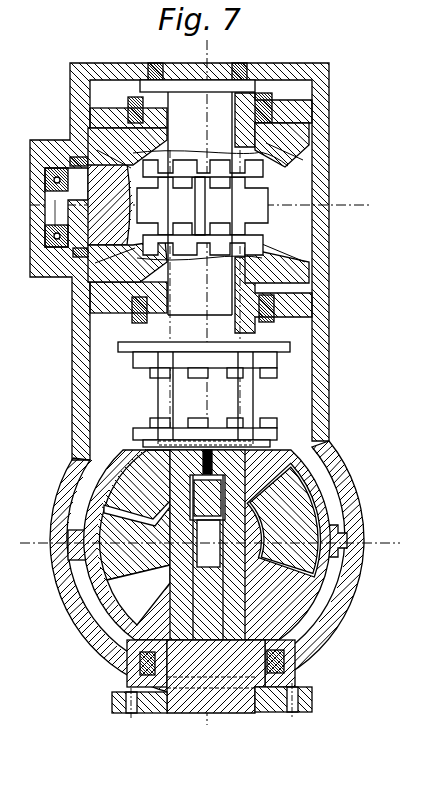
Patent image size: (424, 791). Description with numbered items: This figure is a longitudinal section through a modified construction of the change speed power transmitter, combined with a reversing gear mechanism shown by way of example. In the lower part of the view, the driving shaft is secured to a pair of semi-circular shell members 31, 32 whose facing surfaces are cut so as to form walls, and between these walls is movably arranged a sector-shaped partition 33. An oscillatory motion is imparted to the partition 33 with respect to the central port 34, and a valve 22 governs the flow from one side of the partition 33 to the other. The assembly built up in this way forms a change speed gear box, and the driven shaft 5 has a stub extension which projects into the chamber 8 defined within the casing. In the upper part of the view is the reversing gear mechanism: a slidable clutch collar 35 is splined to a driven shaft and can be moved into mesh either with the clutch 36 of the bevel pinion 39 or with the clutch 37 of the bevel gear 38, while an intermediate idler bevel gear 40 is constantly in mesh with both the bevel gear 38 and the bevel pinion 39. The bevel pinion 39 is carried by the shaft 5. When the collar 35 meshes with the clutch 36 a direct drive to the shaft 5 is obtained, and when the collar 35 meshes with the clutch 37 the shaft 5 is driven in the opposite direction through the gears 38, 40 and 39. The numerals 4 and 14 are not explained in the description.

The housing 4 is at (164, 261).
The driven shaft 5 is at (148, 400).
The chamber 8 is at (47, 543).
The base 14 is at (83, 697).
The valve 22 is at (215, 497).
The semi-circular shell member 31 is at (283, 605).
The semi-circular shell member 32 is at (307, 483).
The sector-shaped partition 33 is at (315, 568).
The central port 34 is at (210, 548).
The slidable clutch collar 35 is at (283, 202).
The clutch 36 is at (146, 292).
The clutch 37 is at (268, 170).
The bevel gear 38 is at (309, 135).
The bevel pinion 39 is at (135, 248).
The intermediate idler bevel gear 40 is at (36, 199).